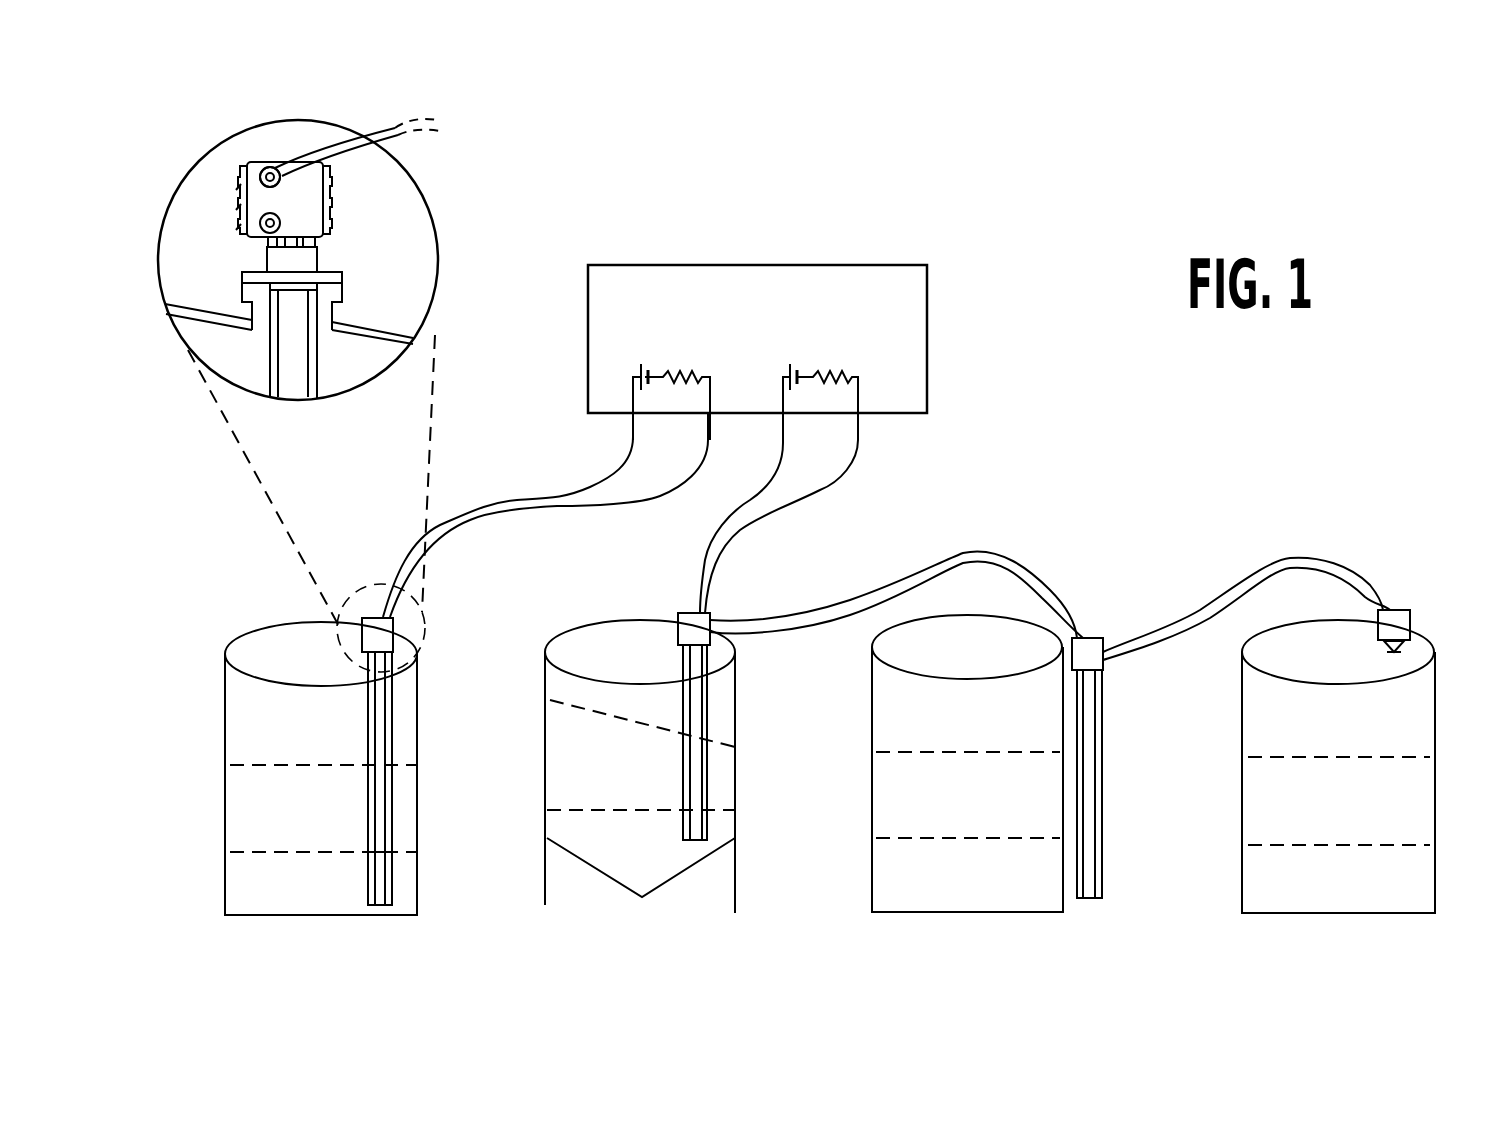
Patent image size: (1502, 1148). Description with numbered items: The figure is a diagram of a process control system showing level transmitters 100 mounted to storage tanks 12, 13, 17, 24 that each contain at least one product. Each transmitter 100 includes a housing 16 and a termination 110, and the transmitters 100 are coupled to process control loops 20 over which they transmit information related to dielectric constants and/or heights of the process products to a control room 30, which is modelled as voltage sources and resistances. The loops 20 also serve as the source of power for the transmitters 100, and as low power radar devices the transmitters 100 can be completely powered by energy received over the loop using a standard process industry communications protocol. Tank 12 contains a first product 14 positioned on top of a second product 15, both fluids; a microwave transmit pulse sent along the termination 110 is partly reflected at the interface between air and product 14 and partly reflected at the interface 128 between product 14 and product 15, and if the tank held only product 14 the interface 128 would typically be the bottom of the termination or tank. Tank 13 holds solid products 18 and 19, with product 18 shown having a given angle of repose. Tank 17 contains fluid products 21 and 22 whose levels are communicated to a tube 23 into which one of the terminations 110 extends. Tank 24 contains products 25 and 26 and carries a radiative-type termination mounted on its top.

The storage tank 12 is at (225, 700).
The storage tank 13 is at (735, 777).
The first product 14 is at (288, 813).
The second product 15 is at (302, 896).
The housing 16 is at (271, 168).
The storage tank 17 is at (872, 880).
The process product 18 is at (626, 775).
The process product 19 is at (642, 863).
The process control loop 20 is at (520, 508).
The process product 21 is at (976, 800).
The process product 22 is at (978, 896).
The tube 23 is at (1102, 698).
The storage tank 24 is at (1435, 700).
The product 25 is at (1347, 807).
The product 26 is at (1346, 892).
The control room 30 is at (905, 339).
The level transmitter 100 is at (353, 205).
The termination 110 is at (322, 343).
The interface 128 is at (400, 853).